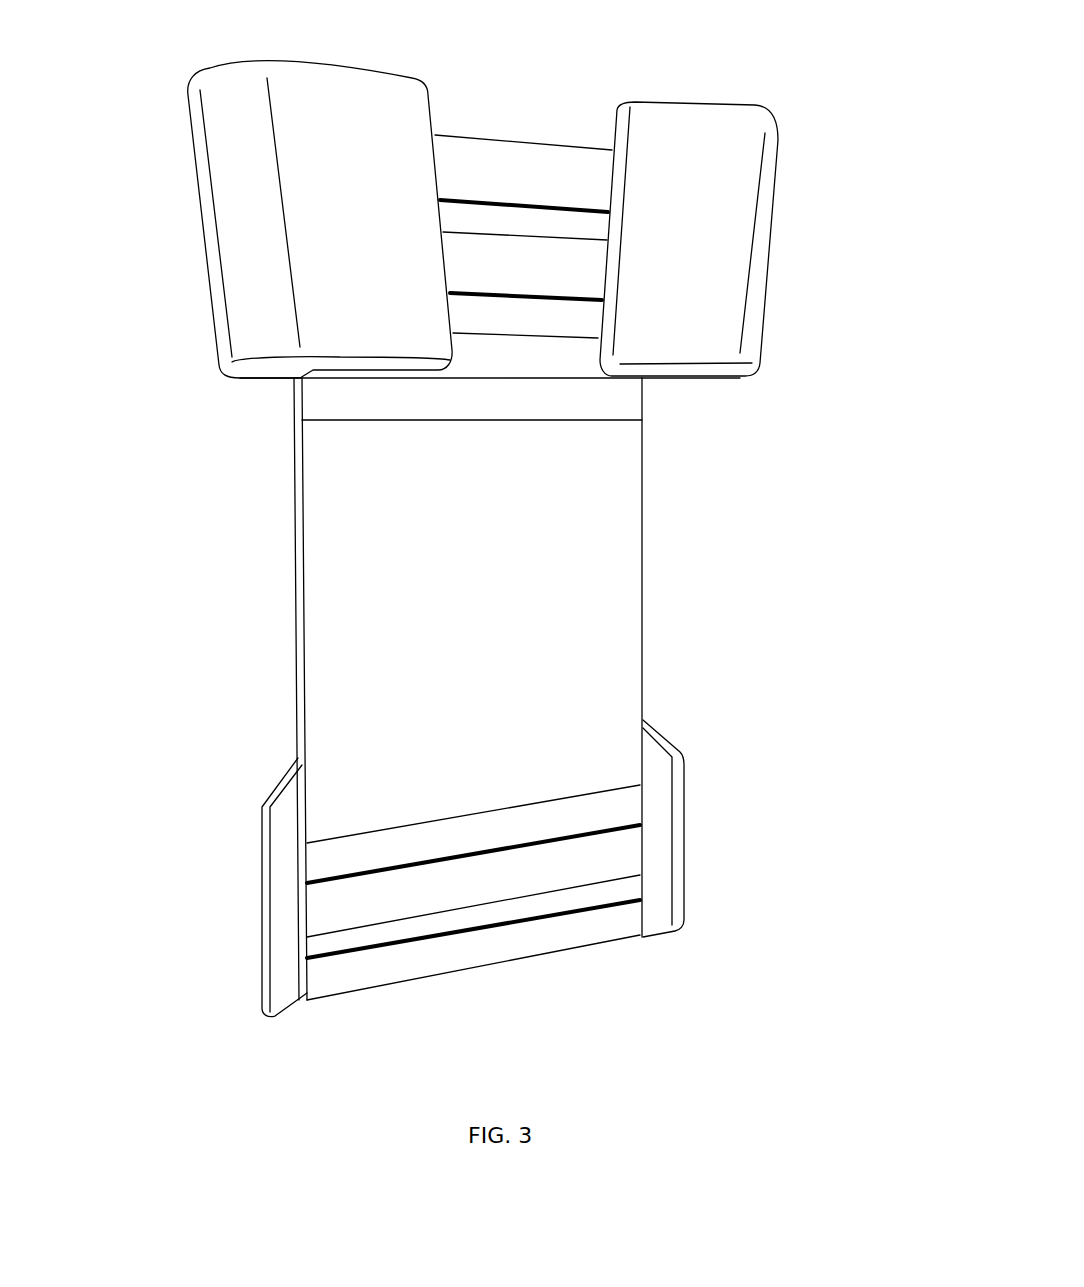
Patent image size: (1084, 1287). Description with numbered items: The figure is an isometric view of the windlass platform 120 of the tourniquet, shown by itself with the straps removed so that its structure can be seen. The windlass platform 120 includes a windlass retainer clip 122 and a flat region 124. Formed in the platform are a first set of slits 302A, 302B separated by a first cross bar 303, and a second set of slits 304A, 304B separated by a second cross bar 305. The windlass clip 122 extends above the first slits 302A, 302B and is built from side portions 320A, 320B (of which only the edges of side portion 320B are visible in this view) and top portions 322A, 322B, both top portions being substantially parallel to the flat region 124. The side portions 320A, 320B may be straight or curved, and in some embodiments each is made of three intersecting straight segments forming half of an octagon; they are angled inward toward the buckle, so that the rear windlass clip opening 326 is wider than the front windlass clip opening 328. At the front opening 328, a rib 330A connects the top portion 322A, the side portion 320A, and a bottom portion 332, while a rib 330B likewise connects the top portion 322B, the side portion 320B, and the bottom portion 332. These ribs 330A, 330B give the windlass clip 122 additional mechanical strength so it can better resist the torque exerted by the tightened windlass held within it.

The windlass platform 120 is at (840, 106).
The windlass retainer clip 122 is at (767, 263).
The flat region 124 is at (512, 645).
The first slit 302A is at (493, 218).
The first slit 302B is at (493, 312).
The first cross bar 303 is at (543, 250).
The second slit 304A is at (340, 855).
The second slit 304B is at (598, 892).
The second cross bar 305 is at (467, 882).
The side portion 320A is at (205, 225).
The side portion 320B is at (763, 303).
The top portion 322A is at (381, 222).
The top portion 322B is at (728, 239).
The rear windlass clip opening 326 is at (518, 120).
The front windlass clip opening 328 is at (543, 353).
The rib 330A is at (262, 377).
The rib 330B is at (703, 378).
The bottom portion 332 is at (501, 370).